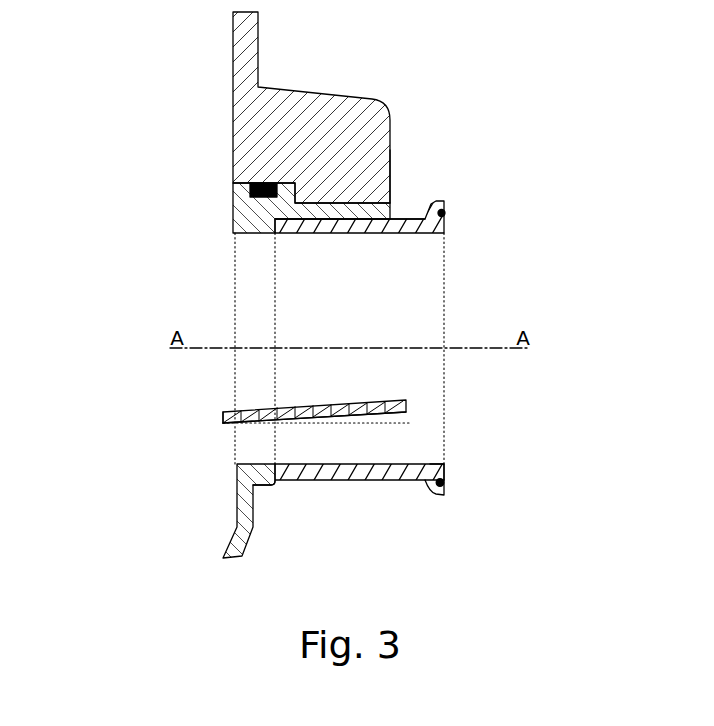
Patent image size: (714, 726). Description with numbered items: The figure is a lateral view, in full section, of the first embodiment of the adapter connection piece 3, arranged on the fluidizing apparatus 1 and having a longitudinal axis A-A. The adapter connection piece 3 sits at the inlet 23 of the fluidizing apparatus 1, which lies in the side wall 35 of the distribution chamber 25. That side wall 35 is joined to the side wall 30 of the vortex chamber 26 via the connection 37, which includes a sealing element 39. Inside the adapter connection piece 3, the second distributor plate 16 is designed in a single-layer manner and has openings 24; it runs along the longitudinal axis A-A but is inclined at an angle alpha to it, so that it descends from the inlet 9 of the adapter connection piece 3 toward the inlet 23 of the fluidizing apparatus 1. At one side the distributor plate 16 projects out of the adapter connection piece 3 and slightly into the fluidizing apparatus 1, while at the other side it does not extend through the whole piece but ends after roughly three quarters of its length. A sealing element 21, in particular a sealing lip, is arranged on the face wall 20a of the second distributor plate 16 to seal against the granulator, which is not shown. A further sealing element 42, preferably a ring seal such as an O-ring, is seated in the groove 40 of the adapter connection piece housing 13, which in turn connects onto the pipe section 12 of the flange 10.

The fluidizing apparatus 1 is at (168, 87).
The adapter connection piece 3 is at (448, 176).
The inlet of the adapter connection piece 9 is at (449, 468).
The flange 10 is at (446, 495).
The pipe section 12 is at (401, 468).
The adapter connection piece housing 13 is at (358, 485).
The second distributor plate 16 is at (219, 417).
The face wall 20a is at (410, 395).
The sealing element 21 is at (407, 407).
The inlet of the fluidizing apparatus 23 is at (266, 502).
The openings 24 is at (252, 411).
The distribution chamber 25 is at (196, 544).
The vortex chamber 26 is at (210, 195).
The side wall of the vortex chamber 30 is at (312, 107).
The side wall of the distribution chamber 35 is at (242, 225).
The connection 37 is at (396, 192).
The sealing element 39 is at (250, 197).
The groove 40 is at (452, 203).
The sealing element 42 is at (445, 212).